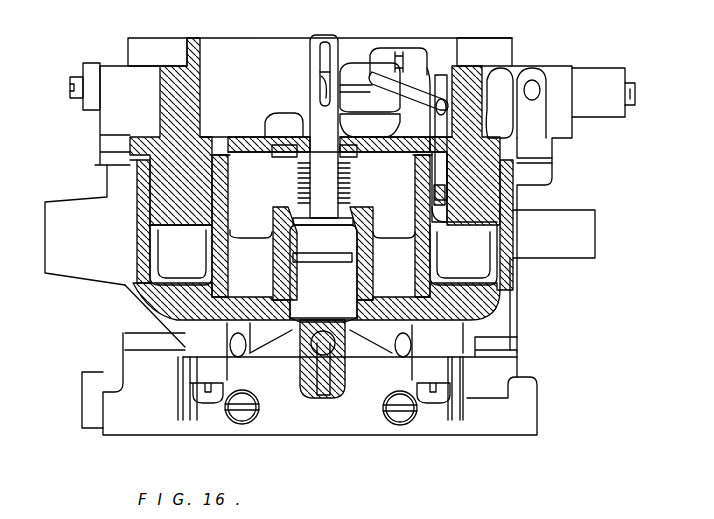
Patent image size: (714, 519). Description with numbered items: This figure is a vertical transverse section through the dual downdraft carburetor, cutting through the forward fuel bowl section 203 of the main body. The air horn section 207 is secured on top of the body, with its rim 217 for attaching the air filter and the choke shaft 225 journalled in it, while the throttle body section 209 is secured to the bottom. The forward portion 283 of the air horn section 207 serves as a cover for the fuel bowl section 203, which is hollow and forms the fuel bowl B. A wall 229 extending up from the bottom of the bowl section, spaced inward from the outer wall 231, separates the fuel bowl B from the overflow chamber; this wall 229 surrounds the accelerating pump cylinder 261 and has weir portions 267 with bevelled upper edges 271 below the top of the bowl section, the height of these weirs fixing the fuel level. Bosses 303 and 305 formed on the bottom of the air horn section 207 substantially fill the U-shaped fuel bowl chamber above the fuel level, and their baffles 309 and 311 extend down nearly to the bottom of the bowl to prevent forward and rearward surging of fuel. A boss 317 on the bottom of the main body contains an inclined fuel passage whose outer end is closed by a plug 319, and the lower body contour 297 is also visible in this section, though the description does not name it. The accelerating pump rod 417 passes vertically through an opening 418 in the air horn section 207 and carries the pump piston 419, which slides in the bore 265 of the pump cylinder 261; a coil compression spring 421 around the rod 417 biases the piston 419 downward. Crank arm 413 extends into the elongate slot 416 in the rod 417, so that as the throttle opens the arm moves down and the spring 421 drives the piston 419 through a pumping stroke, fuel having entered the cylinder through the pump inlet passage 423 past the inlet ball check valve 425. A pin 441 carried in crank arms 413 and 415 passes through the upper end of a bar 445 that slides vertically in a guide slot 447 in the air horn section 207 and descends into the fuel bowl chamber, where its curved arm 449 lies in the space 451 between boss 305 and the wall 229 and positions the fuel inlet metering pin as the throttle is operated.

The fuel bowl section 203 is at (512, 276).
The air horn section 207 is at (113, 70).
The throttle body section 209 is at (517, 368).
The rim 217 is at (513, 47).
The choke shaft 225 is at (77, 77).
The wall 229 is at (226, 181).
The outer wall 231 is at (135, 234).
The accelerating pump cylinder 261 is at (365, 271).
The bore 265 is at (290, 269).
The weir portions 267 is at (364, 289).
The bevelled upper edges 271 is at (262, 230).
The forward portion 283 is at (258, 137).
The floor 297 is at (150, 293).
The boss 303 is at (163, 174).
The boss 305 is at (485, 197).
The baffle 309 is at (500, 292).
The baffle 311 is at (165, 276).
The boss 317 is at (229, 333).
The plug 319 is at (239, 357).
The arm 413 is at (321, 49).
The arm 415 is at (375, 66).
The elongate slot 416 is at (321, 90).
The accelerating pump rod 417 is at (325, 38).
The opening 418 is at (290, 127).
The pump piston 419 is at (324, 246).
The coil compression spring 421 is at (300, 195).
The pump inlet passage 423 is at (324, 392).
The inlet ball check valve 425 is at (336, 350).
The pin 441 is at (400, 50).
The bar 445 is at (444, 74).
The guide slot 447 is at (440, 141).
The curved arm 449 is at (432, 208).
The space 451 is at (433, 190).
The fuel bowl B is at (150, 262).